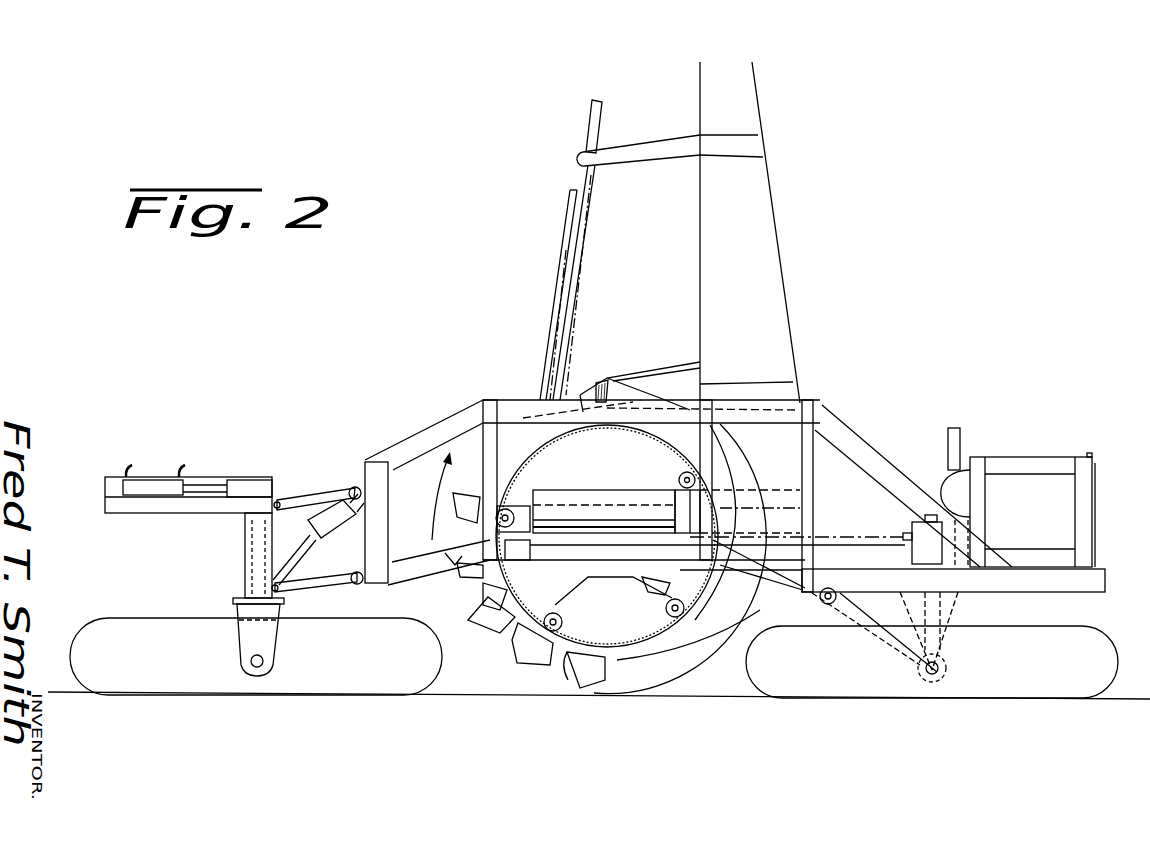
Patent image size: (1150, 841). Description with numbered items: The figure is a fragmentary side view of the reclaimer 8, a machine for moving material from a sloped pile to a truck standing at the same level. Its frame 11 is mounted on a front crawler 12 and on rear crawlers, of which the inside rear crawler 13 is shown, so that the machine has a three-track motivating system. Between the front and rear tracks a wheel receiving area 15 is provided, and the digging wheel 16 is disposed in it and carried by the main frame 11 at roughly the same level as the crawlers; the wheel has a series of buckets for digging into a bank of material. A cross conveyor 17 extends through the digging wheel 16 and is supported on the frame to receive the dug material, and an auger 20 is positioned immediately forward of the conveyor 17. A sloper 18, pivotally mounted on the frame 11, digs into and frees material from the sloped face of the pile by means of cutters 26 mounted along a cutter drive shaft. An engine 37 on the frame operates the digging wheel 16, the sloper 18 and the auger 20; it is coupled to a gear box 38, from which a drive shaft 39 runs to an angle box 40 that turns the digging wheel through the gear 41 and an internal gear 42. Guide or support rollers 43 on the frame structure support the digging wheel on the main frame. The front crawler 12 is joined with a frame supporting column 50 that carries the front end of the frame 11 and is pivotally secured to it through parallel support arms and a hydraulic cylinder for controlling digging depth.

The reclaimer 8 is at (1106, 563).
The frame 11 is at (1083, 588).
The front crawler 12 is at (317, 680).
The inside rear crawler 13 is at (1037, 690).
The wheel receiving area 15 is at (657, 685).
The digging wheel 16 is at (578, 680).
The cross conveyor 17 is at (622, 515).
The sloper 18 is at (570, 261).
The auger 20 is at (482, 575).
The cutters 26 is at (604, 139).
The engine 37 is at (1013, 498).
The gear box 38 is at (911, 548).
The drive shaft 39 is at (843, 536).
The angle box 40 is at (513, 538).
The gear 41 is at (494, 533).
The internal gear 42 is at (636, 648).
The support rollers 43 is at (548, 628).
The frame supporting column 50 is at (253, 550).